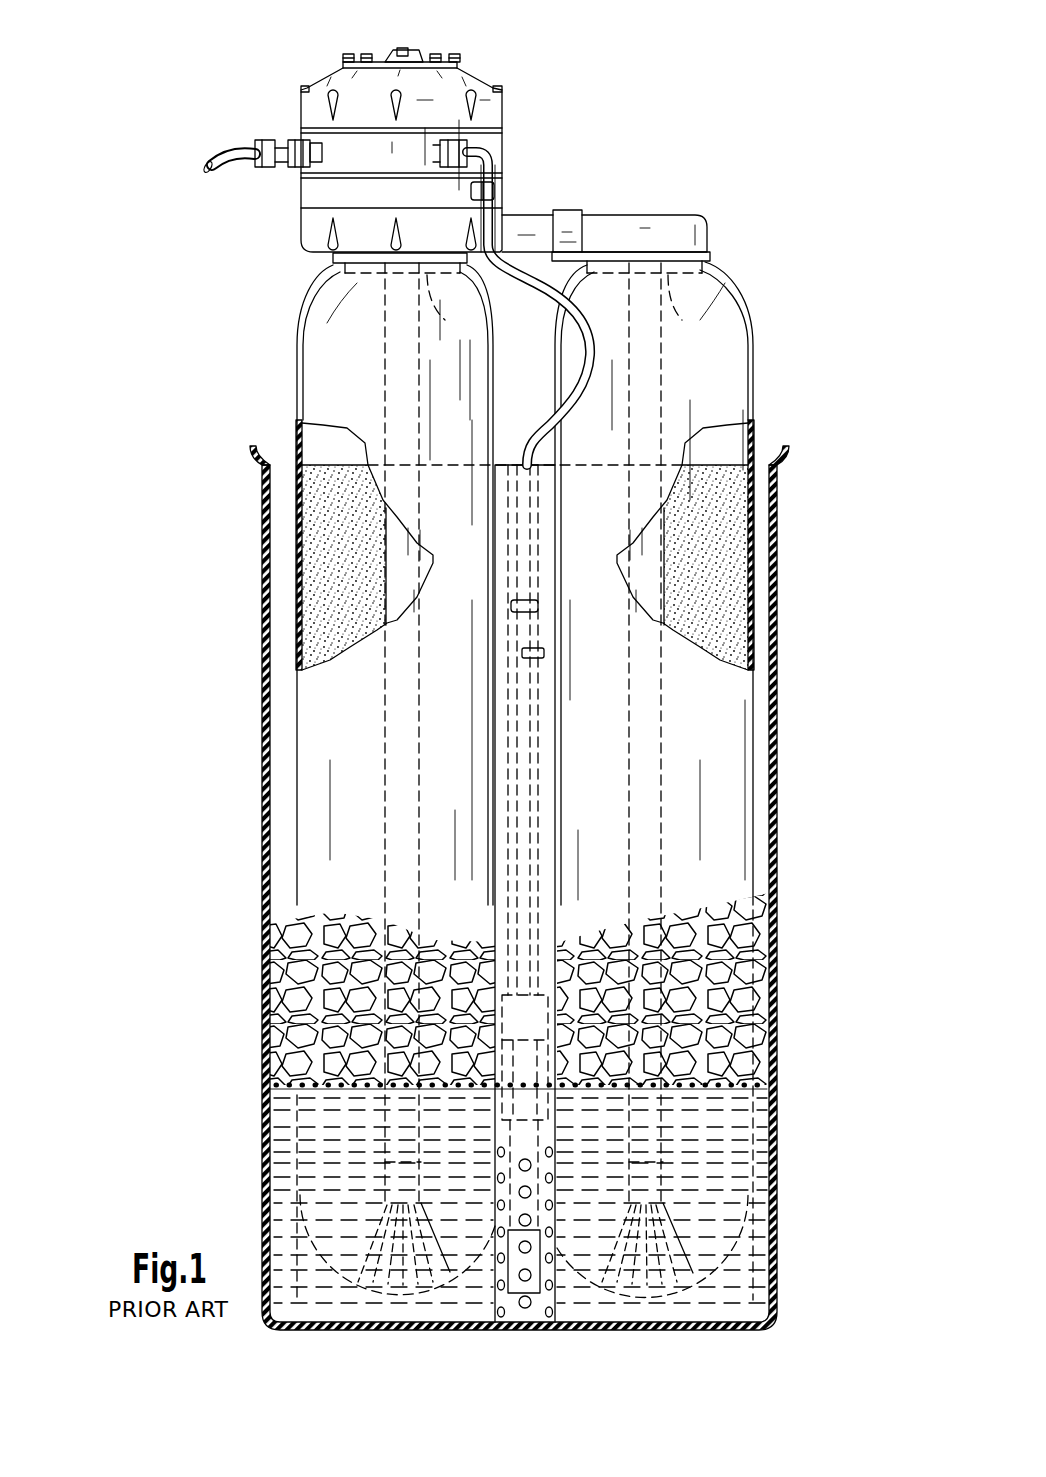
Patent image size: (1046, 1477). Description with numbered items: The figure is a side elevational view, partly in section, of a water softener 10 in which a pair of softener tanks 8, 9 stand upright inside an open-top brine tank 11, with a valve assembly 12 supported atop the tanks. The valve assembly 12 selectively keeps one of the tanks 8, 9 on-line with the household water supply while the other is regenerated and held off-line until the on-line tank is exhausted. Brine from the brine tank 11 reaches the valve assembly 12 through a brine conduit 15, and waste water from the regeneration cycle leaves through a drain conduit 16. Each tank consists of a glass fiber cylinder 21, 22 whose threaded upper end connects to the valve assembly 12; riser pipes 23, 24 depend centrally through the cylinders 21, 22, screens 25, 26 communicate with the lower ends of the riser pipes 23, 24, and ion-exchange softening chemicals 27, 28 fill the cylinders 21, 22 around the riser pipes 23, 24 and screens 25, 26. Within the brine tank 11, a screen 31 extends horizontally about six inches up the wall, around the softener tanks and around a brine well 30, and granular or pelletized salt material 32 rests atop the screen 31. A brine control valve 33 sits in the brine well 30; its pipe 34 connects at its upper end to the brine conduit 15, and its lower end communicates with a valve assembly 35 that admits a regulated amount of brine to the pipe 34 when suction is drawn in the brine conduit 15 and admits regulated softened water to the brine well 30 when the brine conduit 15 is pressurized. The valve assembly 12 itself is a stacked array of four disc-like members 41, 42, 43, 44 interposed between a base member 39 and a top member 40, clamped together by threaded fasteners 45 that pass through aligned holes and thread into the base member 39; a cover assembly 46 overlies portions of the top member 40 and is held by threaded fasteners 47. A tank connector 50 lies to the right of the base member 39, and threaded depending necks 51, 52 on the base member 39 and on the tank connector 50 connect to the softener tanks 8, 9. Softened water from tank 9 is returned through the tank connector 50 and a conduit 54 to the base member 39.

The softener tank 8 is at (298, 297).
The softener tank 9 is at (760, 297).
The water softener 10 is at (600, 66).
The brine tank 11 is at (778, 603).
The valve assembly 12 is at (403, 126).
The brine conduit 15 is at (572, 298).
The drain conduit 16 is at (225, 168).
The cylinder 21 is at (303, 605).
The cylinder 22 is at (748, 605).
The riser pipe 23 is at (410, 562).
The riser pipe 24 is at (643, 547).
The screen 25 is at (423, 1210).
The screen 26 is at (683, 1215).
The ion-exchange softening chemicals 27 is at (321, 563).
The ion-exchange softening chemicals 28 is at (699, 563).
The brine well 30 is at (543, 785).
The screen 31 is at (365, 1090).
The salt material 32 is at (319, 1017).
The brine control valve 33 is at (513, 1038).
The pipe 34 is at (528, 660).
The valve assembly 35 is at (560, 1273).
The base member 39 is at (305, 222).
The top member 40 is at (490, 116).
The disc-like member 41 is at (500, 132).
The disc-like member 42 is at (495, 152).
The disc-like member 43 is at (496, 172).
The disc-like member 44 is at (500, 196).
The threaded fastener 45 is at (305, 88).
The cover assembly 46 is at (425, 48).
The threaded fastener 47 is at (350, 52).
The tank connector 50 is at (690, 235).
The depending neck 51 is at (450, 303).
The depending neck 52 is at (691, 306).
The conduit 54 is at (548, 215).